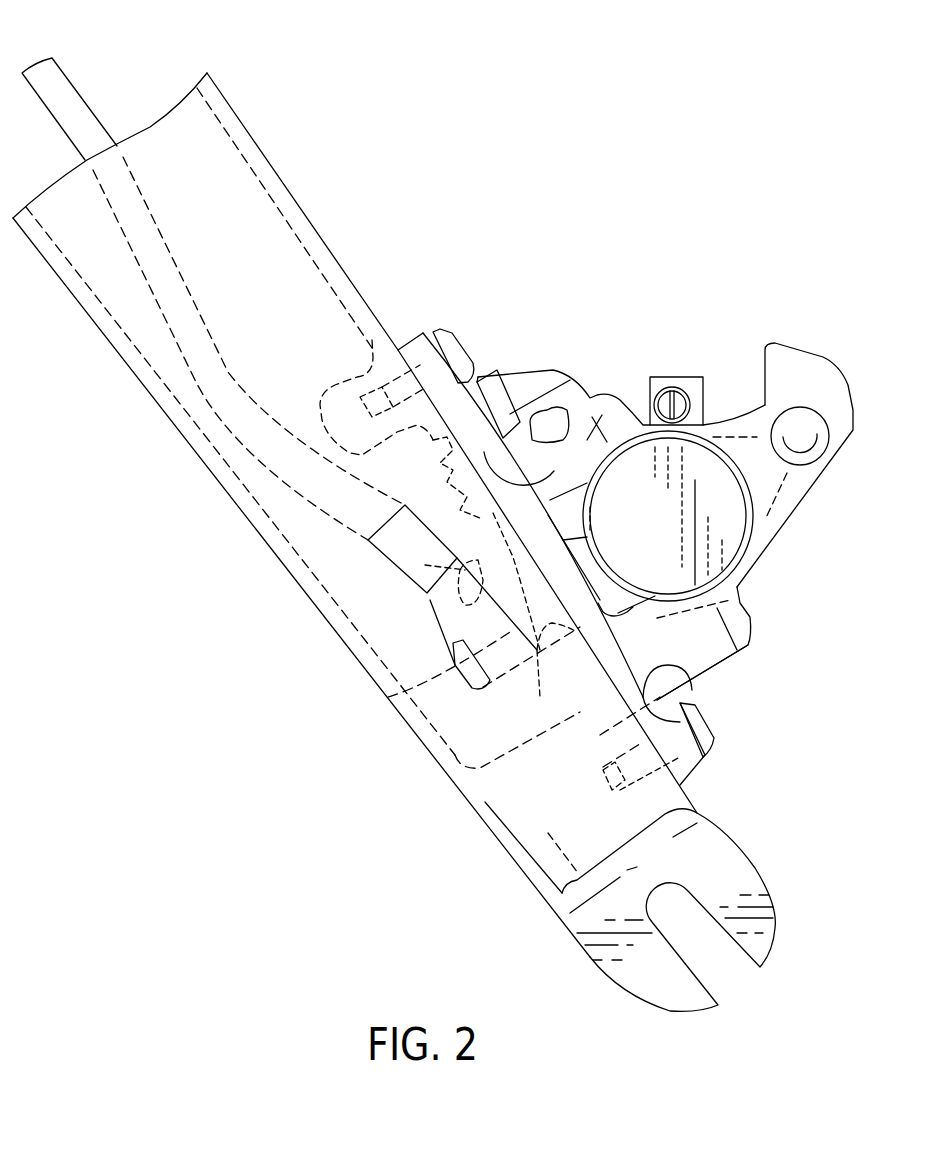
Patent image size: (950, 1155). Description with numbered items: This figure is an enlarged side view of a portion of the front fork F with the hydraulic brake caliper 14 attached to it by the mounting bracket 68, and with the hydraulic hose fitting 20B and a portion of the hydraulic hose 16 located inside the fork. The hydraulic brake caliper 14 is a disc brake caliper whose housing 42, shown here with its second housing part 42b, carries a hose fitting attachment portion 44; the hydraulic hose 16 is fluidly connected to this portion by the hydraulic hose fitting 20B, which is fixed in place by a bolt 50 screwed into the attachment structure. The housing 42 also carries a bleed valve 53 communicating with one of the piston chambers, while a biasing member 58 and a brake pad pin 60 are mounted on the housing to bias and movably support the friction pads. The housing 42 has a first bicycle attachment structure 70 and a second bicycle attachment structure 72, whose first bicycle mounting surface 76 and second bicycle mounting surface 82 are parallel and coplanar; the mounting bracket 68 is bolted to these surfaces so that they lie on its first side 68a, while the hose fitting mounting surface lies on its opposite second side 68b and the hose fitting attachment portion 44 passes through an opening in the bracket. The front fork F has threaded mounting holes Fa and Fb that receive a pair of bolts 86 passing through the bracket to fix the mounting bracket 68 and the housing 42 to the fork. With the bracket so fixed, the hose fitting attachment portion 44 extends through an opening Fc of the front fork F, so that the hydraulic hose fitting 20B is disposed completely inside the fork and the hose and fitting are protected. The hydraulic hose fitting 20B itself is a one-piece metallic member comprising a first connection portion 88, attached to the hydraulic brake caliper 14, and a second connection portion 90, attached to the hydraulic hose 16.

The front fork F is at (277, 170).
The threaded mounting hole Fa is at (352, 374).
The threaded mounting hole Fb is at (608, 792).
The opening Fc is at (555, 667).
The hydraulic brake caliper 14 is at (707, 290).
The hydraulic hose 16 is at (80, 79).
The hydraulic hose fitting 20B is at (436, 636).
The housing 42 is at (802, 351).
The second housing part 42b is at (793, 487).
The hose fitting attachment portion 44 is at (478, 548).
The bolt 50 is at (388, 696).
The bleed valve 53 is at (430, 457).
The biasing member 58 is at (655, 377).
The brake pad pin 60 is at (703, 400).
The mounting bracket 68 is at (407, 334).
The first side 68a is at (700, 672).
The second side 68b is at (637, 723).
The first bicycle attachment structure 70 is at (613, 397).
The second bicycle attachment structure 72 is at (705, 634).
The first bicycle mounting surface 76 is at (497, 375).
The second bicycle mounting surface 82 is at (700, 753).
The bolts 86 is at (462, 347).
The first connection portion 88 is at (513, 675).
The second connection portion 90 is at (388, 562).